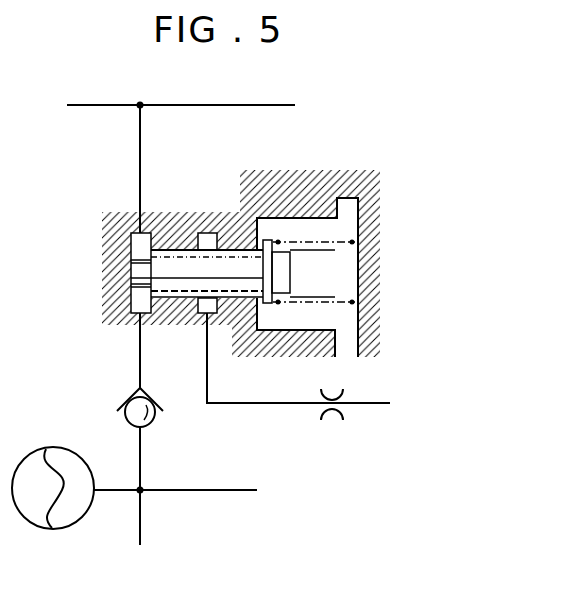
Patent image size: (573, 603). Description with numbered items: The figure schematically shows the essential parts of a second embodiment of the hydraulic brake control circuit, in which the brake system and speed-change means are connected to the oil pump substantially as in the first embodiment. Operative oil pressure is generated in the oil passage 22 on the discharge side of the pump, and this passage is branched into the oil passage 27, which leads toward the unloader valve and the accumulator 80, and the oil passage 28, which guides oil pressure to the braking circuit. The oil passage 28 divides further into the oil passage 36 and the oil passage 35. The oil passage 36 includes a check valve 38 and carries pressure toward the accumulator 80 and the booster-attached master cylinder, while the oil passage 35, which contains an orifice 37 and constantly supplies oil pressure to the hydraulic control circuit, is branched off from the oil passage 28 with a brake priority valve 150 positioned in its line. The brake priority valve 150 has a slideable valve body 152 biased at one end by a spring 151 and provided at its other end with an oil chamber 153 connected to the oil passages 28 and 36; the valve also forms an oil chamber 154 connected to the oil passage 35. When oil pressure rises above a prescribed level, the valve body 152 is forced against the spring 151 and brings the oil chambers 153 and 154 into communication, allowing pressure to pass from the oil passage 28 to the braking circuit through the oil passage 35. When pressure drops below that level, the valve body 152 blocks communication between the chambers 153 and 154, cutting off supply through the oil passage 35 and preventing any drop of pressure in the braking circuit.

The oil passage 22 is at (103, 104).
The oil passage 27 is at (227, 106).
The oil passage 28 is at (140, 149).
The brake priority valve 150 is at (270, 181).
The spring 151 is at (303, 250).
The valve body 152 is at (181, 258).
The oil chamber 153 is at (130, 247).
The oil chamber 154 is at (203, 314).
The oil passage 36 is at (140, 362).
The check valve 38 is at (149, 422).
The accumulator 80 is at (88, 433).
The oil passage 35 is at (266, 405).
The orifice 37 is at (328, 392).